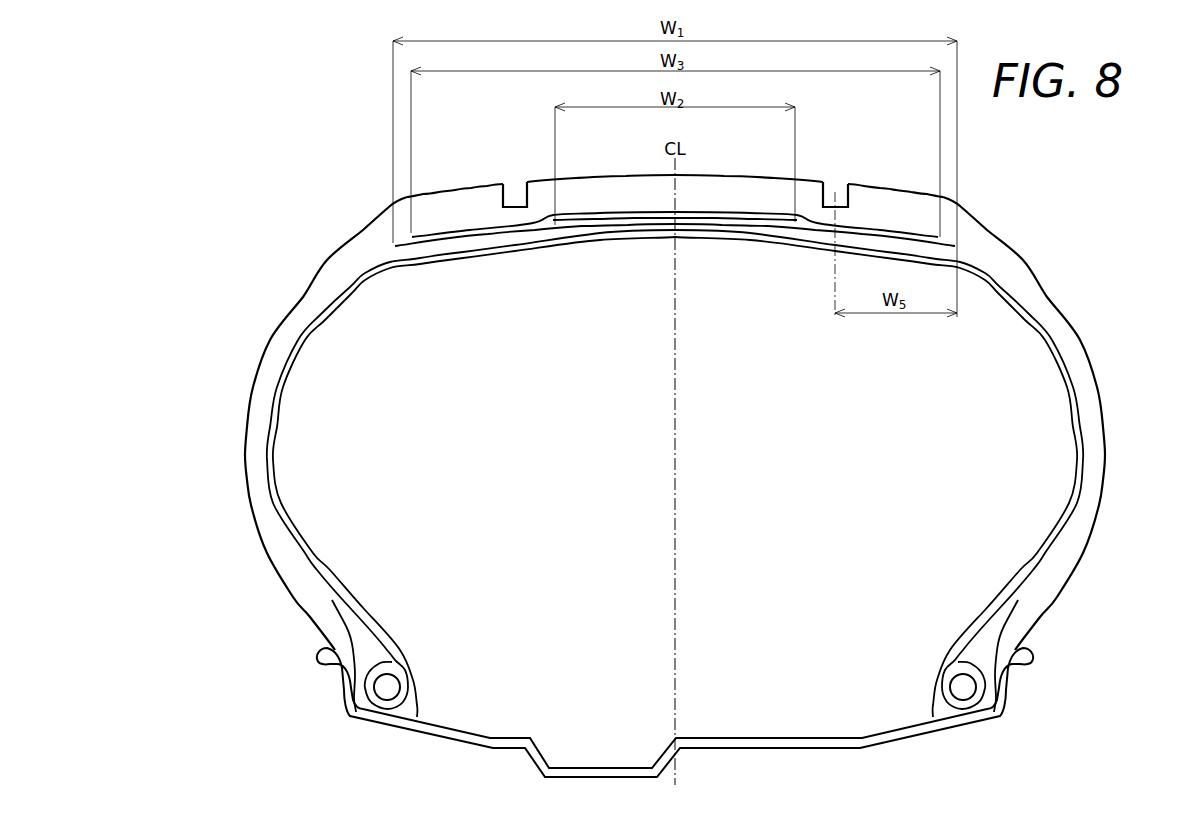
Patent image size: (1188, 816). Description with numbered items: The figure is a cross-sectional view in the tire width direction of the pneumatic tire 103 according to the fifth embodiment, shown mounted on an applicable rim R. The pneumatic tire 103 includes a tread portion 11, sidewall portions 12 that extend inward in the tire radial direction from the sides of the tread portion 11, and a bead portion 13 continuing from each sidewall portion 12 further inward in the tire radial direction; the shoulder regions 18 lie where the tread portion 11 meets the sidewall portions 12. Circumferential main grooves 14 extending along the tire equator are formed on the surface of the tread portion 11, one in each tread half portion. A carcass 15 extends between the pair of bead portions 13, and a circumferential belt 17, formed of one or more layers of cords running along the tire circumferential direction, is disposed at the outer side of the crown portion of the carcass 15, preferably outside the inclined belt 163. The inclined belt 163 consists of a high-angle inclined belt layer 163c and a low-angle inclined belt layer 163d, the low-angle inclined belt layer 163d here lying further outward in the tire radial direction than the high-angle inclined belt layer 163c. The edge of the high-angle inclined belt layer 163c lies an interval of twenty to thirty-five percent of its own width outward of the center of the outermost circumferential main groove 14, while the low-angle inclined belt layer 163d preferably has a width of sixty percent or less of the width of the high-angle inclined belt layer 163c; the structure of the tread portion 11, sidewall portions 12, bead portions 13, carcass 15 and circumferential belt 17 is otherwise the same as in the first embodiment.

The pneumatic tire 103 is at (676, 384).
The tread portion 11 is at (705, 173).
The sidewall portion 12 is at (235, 452).
The bead portion 13 is at (416, 657).
The circumferential main groove 14 is at (508, 192).
The carcass 15 is at (334, 585).
The circumferential belt 17 is at (750, 212).
The shoulder portion 18 is at (458, 189).
The inclined belt 163 is at (675, 275).
The high-angle inclined belt layer 163c is at (557, 231).
The low-angle inclined belt layer 163d is at (675, 256).
The applicable rim R is at (1015, 674).